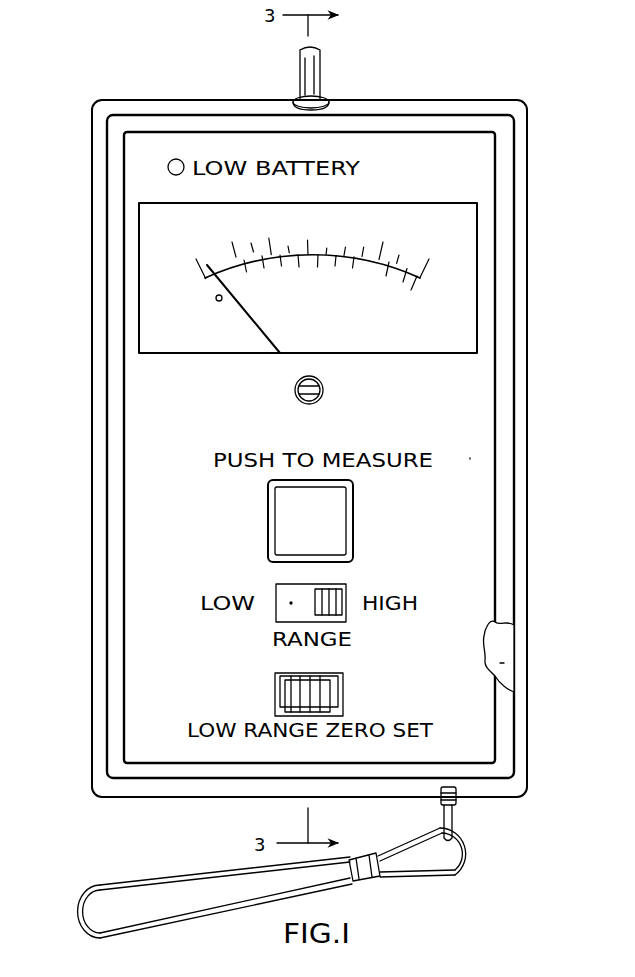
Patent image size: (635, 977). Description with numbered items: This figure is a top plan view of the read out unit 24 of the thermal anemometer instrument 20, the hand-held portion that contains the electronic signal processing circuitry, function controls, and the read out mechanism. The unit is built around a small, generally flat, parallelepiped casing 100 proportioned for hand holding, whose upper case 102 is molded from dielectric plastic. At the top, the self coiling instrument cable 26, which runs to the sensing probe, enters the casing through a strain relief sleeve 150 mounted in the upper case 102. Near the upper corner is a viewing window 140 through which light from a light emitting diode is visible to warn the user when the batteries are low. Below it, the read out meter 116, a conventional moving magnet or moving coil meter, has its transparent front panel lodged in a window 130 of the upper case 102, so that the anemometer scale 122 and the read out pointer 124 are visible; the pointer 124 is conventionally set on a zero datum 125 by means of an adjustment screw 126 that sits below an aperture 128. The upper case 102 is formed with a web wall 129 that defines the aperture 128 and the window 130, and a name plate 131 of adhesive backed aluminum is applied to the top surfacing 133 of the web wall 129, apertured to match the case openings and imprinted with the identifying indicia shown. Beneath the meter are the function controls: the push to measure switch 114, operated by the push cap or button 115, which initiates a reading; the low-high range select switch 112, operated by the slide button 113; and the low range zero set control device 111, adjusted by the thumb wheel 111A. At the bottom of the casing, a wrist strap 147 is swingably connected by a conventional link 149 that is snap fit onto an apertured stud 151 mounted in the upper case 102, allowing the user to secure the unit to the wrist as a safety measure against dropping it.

The thermal anemometer instrument 20 is at (104, 78).
The read out unit 24 is at (550, 112).
The self coiling instrument cable 26 is at (330, 68).
The casing 100 is at (484, 98).
The upper case 102 is at (517, 507).
The low range zero set control device 111 is at (352, 690).
The thumb wheel 111A is at (288, 693).
The low-high range select switch 112 is at (370, 579).
The slide button 113 is at (345, 590).
The push to measure switch 114 is at (332, 519).
The push cap or button 115 is at (276, 523).
The read out meter 116 is at (160, 321).
The anemometer scale 122 is at (462, 278).
The read out pointer 124 is at (277, 351).
The zero datum 125 is at (212, 288).
The adjustment screw 126 is at (326, 398).
The aperture 128 is at (324, 384).
The web wall 129 is at (499, 640).
The window 130 is at (478, 336).
The name plate 131 is at (469, 459).
The top surfacing 133 is at (502, 664).
The viewing window 140 is at (177, 158).
The wrist strap 147 is at (76, 905).
The link 149 is at (456, 818).
The strain relief sleeve 150 is at (326, 99).
The apertured stud 151 is at (448, 787).